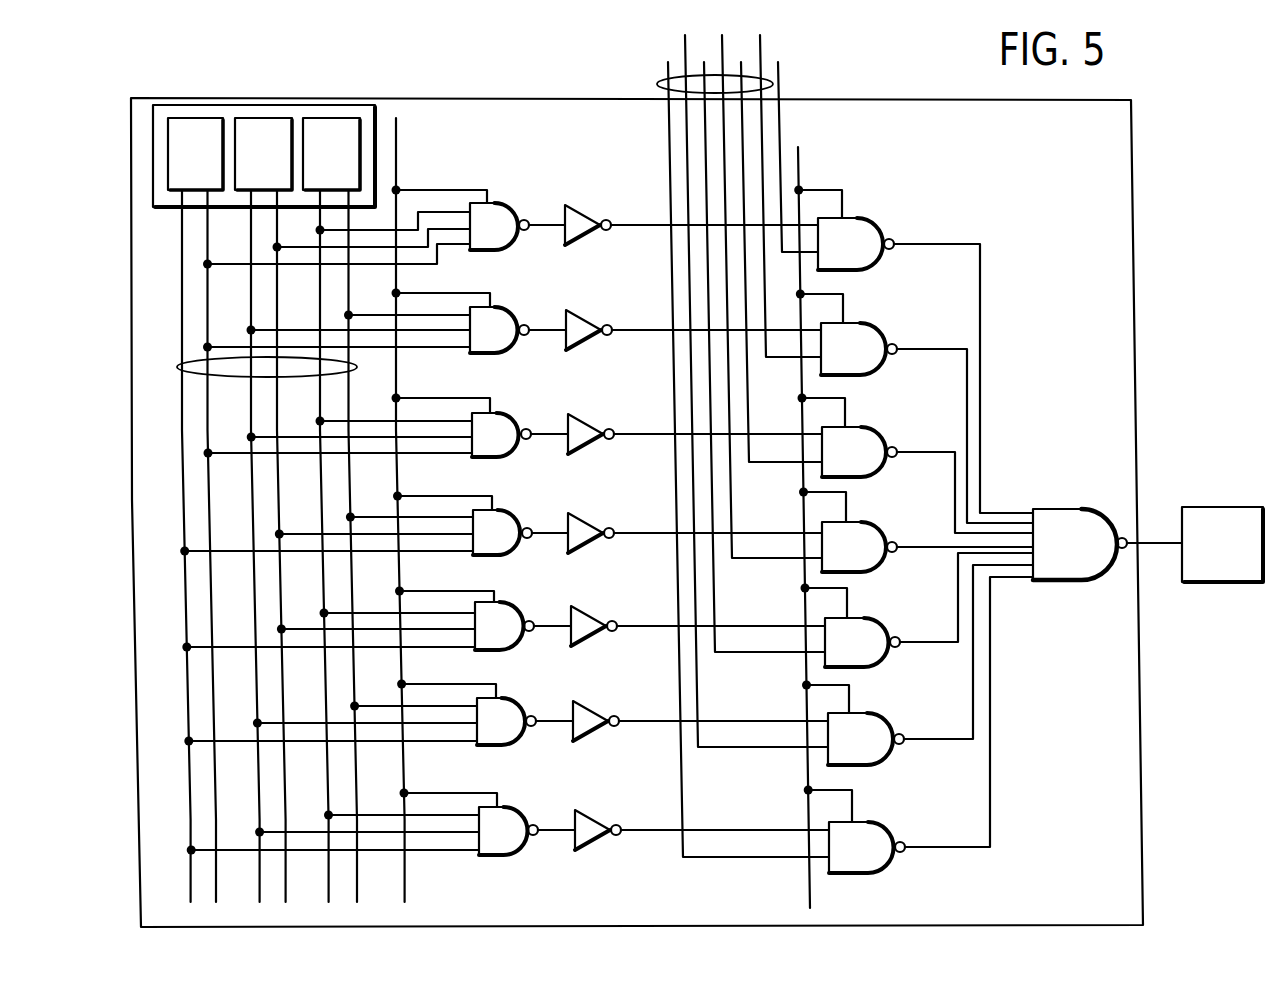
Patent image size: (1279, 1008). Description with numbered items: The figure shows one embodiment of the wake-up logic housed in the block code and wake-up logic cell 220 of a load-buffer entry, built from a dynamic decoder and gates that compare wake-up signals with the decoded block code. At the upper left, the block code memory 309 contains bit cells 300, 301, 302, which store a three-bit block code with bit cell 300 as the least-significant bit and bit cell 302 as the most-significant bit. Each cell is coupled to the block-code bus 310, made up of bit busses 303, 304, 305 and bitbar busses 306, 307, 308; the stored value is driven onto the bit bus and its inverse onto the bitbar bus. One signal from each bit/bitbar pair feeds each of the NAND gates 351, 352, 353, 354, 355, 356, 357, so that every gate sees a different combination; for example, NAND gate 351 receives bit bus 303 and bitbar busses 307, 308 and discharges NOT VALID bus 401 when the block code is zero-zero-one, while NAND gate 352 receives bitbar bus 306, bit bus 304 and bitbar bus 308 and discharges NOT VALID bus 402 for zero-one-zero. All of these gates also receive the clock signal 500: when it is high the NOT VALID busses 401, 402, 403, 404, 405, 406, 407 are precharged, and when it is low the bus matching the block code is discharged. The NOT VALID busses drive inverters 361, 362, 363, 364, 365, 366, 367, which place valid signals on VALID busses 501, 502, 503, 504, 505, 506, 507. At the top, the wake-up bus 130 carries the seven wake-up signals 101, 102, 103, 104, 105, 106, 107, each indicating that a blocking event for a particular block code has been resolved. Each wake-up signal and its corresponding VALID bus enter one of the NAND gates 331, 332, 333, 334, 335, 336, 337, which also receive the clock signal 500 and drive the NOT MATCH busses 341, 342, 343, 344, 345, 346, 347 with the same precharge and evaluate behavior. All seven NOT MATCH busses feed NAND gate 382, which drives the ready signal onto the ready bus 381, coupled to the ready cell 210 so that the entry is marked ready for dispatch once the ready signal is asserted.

The wake-up signal 101 is at (791, 145).
The wake-up signal 102 is at (782, 184).
The wake-up signal 103 is at (772, 250).
The wake-up signal 104 is at (763, 285).
The wake-up signal 105 is at (754, 345).
The wake-up signal 106 is at (747, 379).
The wake-up signal 107 is at (736, 448).
The wake-up bus 130 is at (774, 88).
The ready cell 210 is at (1206, 570).
The block code and wake-up logic cell 220 is at (1144, 778).
The bit cell 300 is at (315, 176).
The bit cell 301 is at (247, 176).
The bit cell 302 is at (180, 176).
The bit bus 303 is at (318, 270).
The bit bus 304 is at (248, 270).
The bit bus 305 is at (180, 270).
The bitbar bus 306 is at (350, 270).
The bitbar bus 307 is at (279, 462).
The bitbar bus 308 is at (209, 383).
The block code memory 309 is at (370, 104).
The block-code bus 310 is at (177, 367).
The NAND gate 331 is at (833, 255).
The NAND gate 332 is at (836, 360).
The NAND gate 333 is at (837, 463).
The NAND gate 334 is at (837, 558).
The NAND gate 335 is at (840, 653).
The NAND gate 336 is at (843, 750).
The NAND gate 337 is at (844, 858).
The NOT MATCH bus 341 is at (930, 247).
The NOT MATCH bus 342 is at (932, 353).
The NOT MATCH bus 343 is at (934, 456).
The NOT MATCH bus 344 is at (936, 550).
The NOT MATCH bus 345 is at (939, 646).
The NOT MATCH bus 346 is at (943, 744).
The NOT MATCH bus 347 is at (943, 851).
The NAND gate 351 is at (477, 236).
The NAND gate 352 is at (477, 341).
The NAND gate 353 is at (479, 445).
The NAND gate 354 is at (480, 544).
The NAND gate 355 is at (482, 637).
The NAND gate 356 is at (484, 732).
The NAND gate 357 is at (486, 841).
The inverter 361 is at (590, 211).
The inverter 362 is at (592, 313).
The inverter 363 is at (592, 418).
The inverter 364 is at (594, 518).
The inverter 365 is at (596, 610).
The inverter 366 is at (599, 704).
The inverter 367 is at (601, 812).
The ready bus 381 is at (1166, 548).
The NAND gate 382 is at (1051, 554).
The NOT VALID bus 401 is at (542, 222).
The NOT VALID bus 402 is at (544, 327).
The NOT VALID bus 403 is at (546, 430).
The NOT VALID bus 404 is at (548, 529).
The NOT VALID bus 405 is at (548, 621).
The NOT VALID bus 406 is at (549, 716).
The NOT VALID bus 407 is at (552, 826).
The clock signal 500 is at (398, 133).
The VALID bus 501 is at (651, 222).
The VALID bus 502 is at (653, 327).
The VALID bus 503 is at (655, 430).
The VALID bus 504 is at (662, 530).
The VALID bus 505 is at (657, 630).
The VALID bus 506 is at (660, 725).
The VALID bus 507 is at (662, 834).